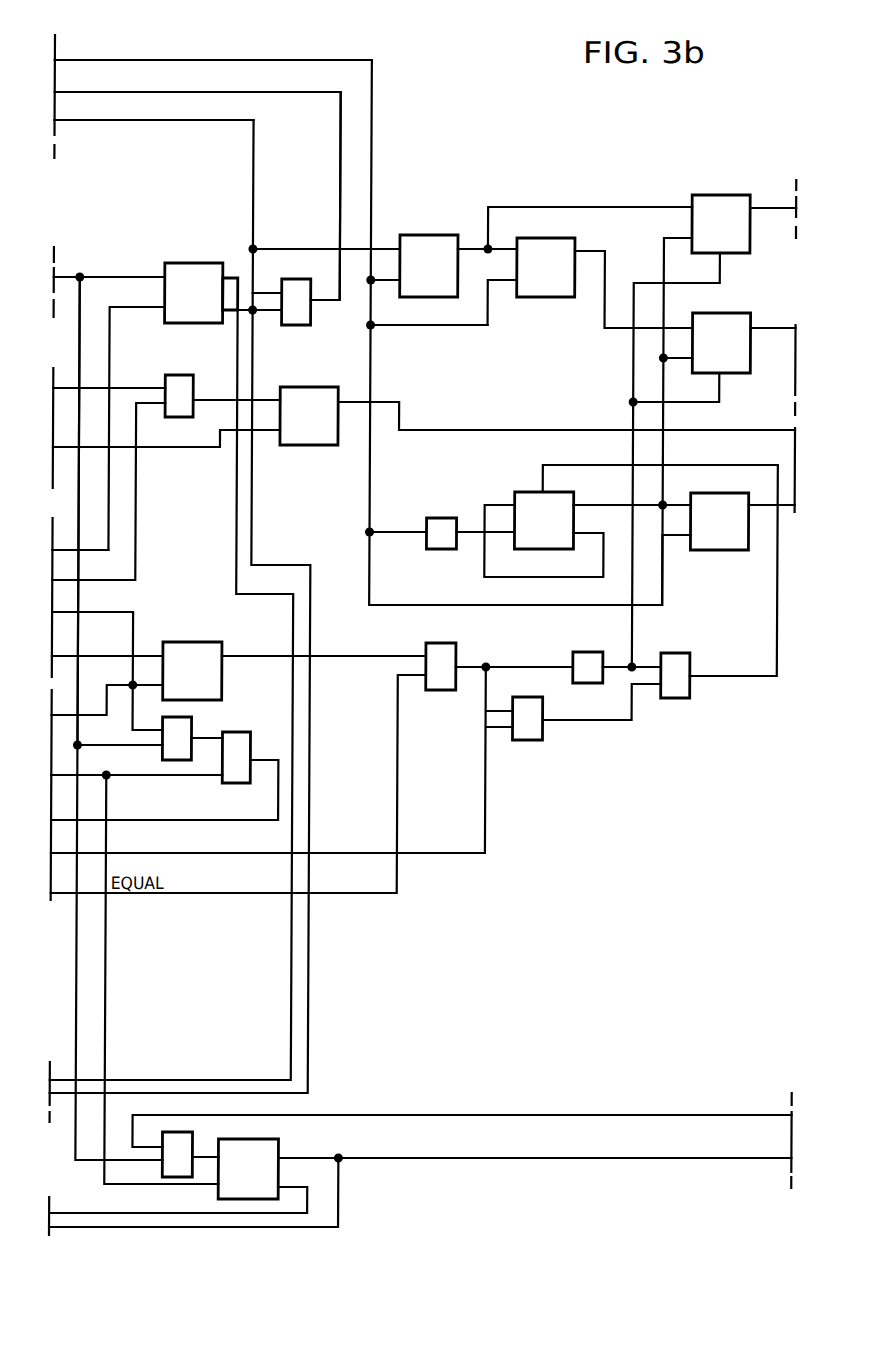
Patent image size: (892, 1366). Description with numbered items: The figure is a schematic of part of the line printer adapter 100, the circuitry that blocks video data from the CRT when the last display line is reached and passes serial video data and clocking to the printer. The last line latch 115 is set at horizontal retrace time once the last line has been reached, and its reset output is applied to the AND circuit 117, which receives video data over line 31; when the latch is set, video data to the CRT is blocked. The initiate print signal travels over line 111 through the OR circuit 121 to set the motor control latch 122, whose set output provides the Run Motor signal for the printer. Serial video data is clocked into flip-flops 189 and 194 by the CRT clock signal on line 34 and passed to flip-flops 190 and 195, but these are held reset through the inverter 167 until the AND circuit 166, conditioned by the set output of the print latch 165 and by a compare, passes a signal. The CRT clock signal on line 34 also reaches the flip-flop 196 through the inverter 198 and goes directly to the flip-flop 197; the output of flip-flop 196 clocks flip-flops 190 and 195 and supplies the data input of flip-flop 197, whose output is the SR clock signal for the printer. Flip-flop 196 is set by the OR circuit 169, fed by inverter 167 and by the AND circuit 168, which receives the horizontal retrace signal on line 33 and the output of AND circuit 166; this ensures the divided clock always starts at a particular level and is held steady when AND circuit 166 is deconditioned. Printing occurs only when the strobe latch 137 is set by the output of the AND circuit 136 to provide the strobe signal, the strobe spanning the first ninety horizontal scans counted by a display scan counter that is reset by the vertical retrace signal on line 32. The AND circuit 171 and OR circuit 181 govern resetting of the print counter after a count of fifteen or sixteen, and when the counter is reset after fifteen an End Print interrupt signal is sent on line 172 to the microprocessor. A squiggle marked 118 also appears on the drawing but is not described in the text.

The CRT clock signal line 34 is at (316, 63).
The video data line 31 is at (211, 124).
The signal line 118 is at (339, 156).
The line printer adapter 100 is at (421, 170).
The initiate print signal line 111 is at (82, 285).
The last line latch 115 is at (184, 322).
The AND circuit 117 is at (307, 279).
The flip-flop 189 is at (418, 233).
The flip-flop 194 is at (543, 298).
The flip-flop 190 is at (712, 192).
The flip-flop 195 is at (712, 315).
The flip-flop 196 is at (514, 481).
The inverter 198 is at (434, 519).
The flip-flop 197 is at (712, 552).
The AND circuit 136 is at (168, 419).
The strobe latch 137 is at (301, 445).
The vertical retrace signal line 32 is at (80, 538).
The End Print interrupt signal line 172 is at (131, 616).
The print latch 165 is at (225, 693).
The AND circuit 171 is at (160, 759).
The OR circuit 181 is at (254, 745).
The AND circuit 166 is at (440, 692).
The inverter 167 is at (583, 652).
The AND circuit 168 is at (526, 742).
The OR circuit 169 is at (676, 699).
The horizontal retrace signal line 33 is at (432, 853).
The OR circuit 121 is at (165, 1140).
The motor control latch 122 is at (286, 1174).